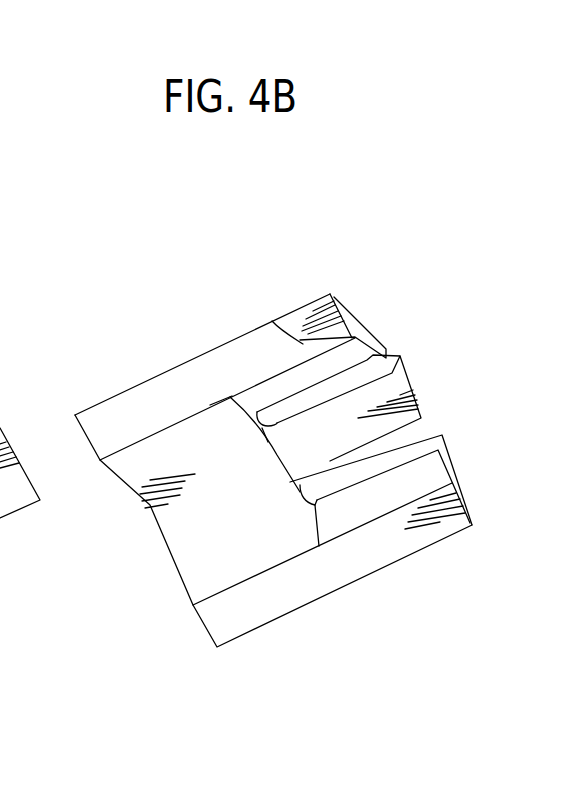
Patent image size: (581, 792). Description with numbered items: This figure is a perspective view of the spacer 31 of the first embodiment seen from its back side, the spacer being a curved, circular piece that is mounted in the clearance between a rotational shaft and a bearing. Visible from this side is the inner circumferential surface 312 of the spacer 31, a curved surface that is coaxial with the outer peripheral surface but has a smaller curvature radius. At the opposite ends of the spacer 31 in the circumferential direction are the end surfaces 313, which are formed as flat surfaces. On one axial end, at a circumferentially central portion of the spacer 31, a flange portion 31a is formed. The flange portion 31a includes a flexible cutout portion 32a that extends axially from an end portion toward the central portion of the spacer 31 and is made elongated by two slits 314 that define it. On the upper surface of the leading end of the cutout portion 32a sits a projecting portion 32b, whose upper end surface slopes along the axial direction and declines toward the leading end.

The spacer 31 is at (187, 331).
The flange portion 31a is at (332, 312).
The cutout portion 32a is at (333, 397).
The projecting portion 32b is at (392, 368).
The inner circumferential surface 312 is at (213, 430).
The end surfaces 313 is at (100, 424).
The slits 314 is at (348, 468).